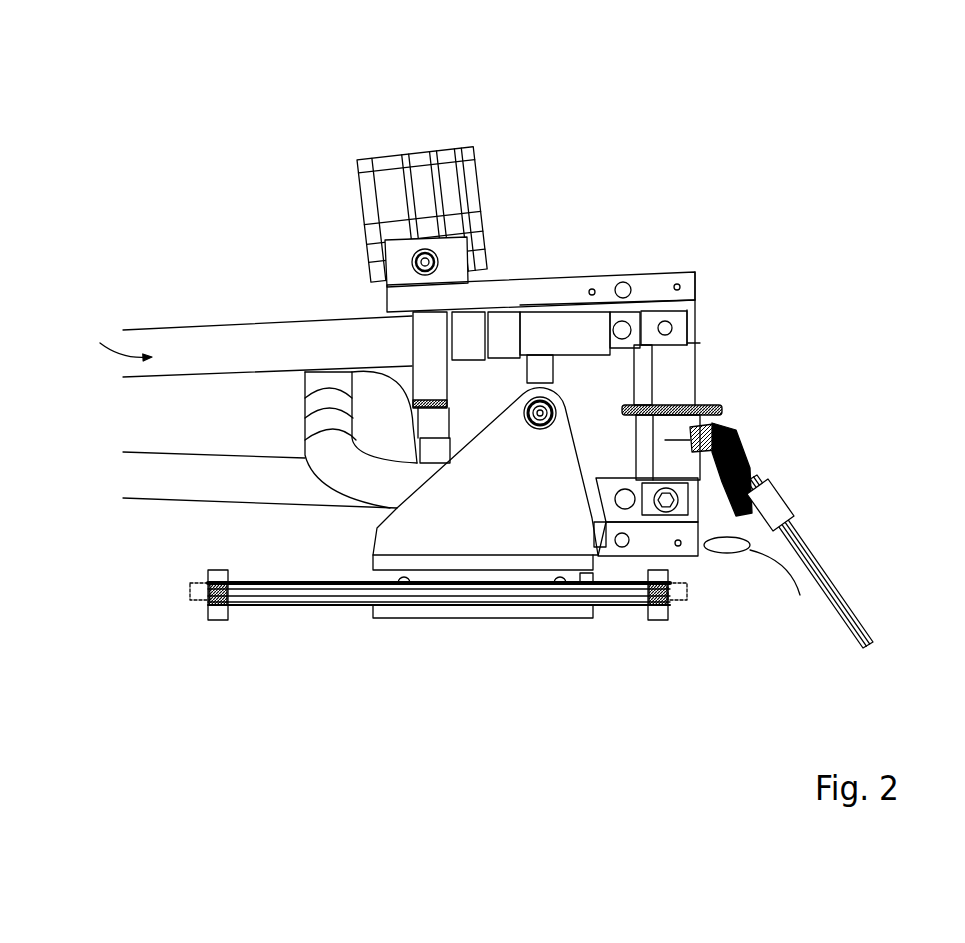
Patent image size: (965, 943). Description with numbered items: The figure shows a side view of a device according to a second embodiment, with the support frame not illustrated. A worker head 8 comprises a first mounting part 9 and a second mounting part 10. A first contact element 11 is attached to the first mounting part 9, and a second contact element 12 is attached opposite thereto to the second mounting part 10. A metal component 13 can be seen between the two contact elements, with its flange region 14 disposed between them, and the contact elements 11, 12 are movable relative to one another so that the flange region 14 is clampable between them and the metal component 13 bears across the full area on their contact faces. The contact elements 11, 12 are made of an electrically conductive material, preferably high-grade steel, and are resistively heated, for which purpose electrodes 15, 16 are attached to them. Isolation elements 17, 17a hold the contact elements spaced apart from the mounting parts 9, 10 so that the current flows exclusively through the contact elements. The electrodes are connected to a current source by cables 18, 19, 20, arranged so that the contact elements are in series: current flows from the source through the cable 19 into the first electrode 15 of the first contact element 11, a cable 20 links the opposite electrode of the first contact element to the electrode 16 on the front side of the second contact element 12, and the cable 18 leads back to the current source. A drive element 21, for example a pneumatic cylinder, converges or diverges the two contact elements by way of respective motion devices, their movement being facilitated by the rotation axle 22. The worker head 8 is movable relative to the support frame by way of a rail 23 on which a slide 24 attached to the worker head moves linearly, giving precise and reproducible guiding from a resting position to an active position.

The worker head 8 is at (718, 197).
The first mounting part 9 is at (523, 286).
The second mounting part 10 is at (647, 552).
The first contact element 11 is at (698, 389).
The second contact element 12 is at (713, 545).
The metal component 13 is at (785, 513).
The flange region 14 is at (700, 407).
The first electrode 15 is at (684, 323).
The electrode 16 is at (669, 510).
The isolation element 17 is at (637, 361).
The isolation element 17a is at (597, 548).
The cable 18 is at (141, 478).
The cable 19 is at (93, 330).
The cable 20 is at (311, 414).
The drive element 21 is at (421, 182).
The rotation axle 22 is at (525, 413).
The rail 23 is at (418, 602).
The slide 24 is at (416, 534).